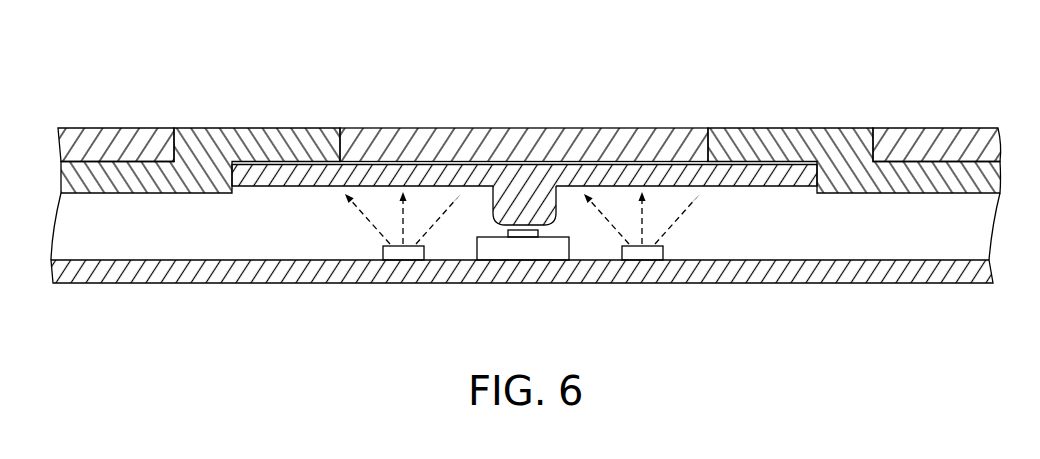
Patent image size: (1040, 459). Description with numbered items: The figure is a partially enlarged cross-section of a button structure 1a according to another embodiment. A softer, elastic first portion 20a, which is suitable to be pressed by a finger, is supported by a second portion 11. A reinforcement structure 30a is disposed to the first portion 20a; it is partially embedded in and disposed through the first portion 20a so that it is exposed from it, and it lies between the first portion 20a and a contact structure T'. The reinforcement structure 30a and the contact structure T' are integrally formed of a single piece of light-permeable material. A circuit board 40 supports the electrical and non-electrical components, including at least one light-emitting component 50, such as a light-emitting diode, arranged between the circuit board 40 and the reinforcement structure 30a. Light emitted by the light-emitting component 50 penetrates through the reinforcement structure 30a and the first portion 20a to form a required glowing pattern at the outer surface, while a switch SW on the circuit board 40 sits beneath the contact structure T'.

The button structure 1a is at (103, 74).
The second portion 11 is at (967, 118).
The first portion 20a is at (776, 114).
The reinforcement structure 30a is at (731, 200).
The contact structure T' is at (491, 261).
The switch SW is at (535, 245).
The light-emitting component 50 is at (642, 260).
The circuit board 40 is at (803, 277).